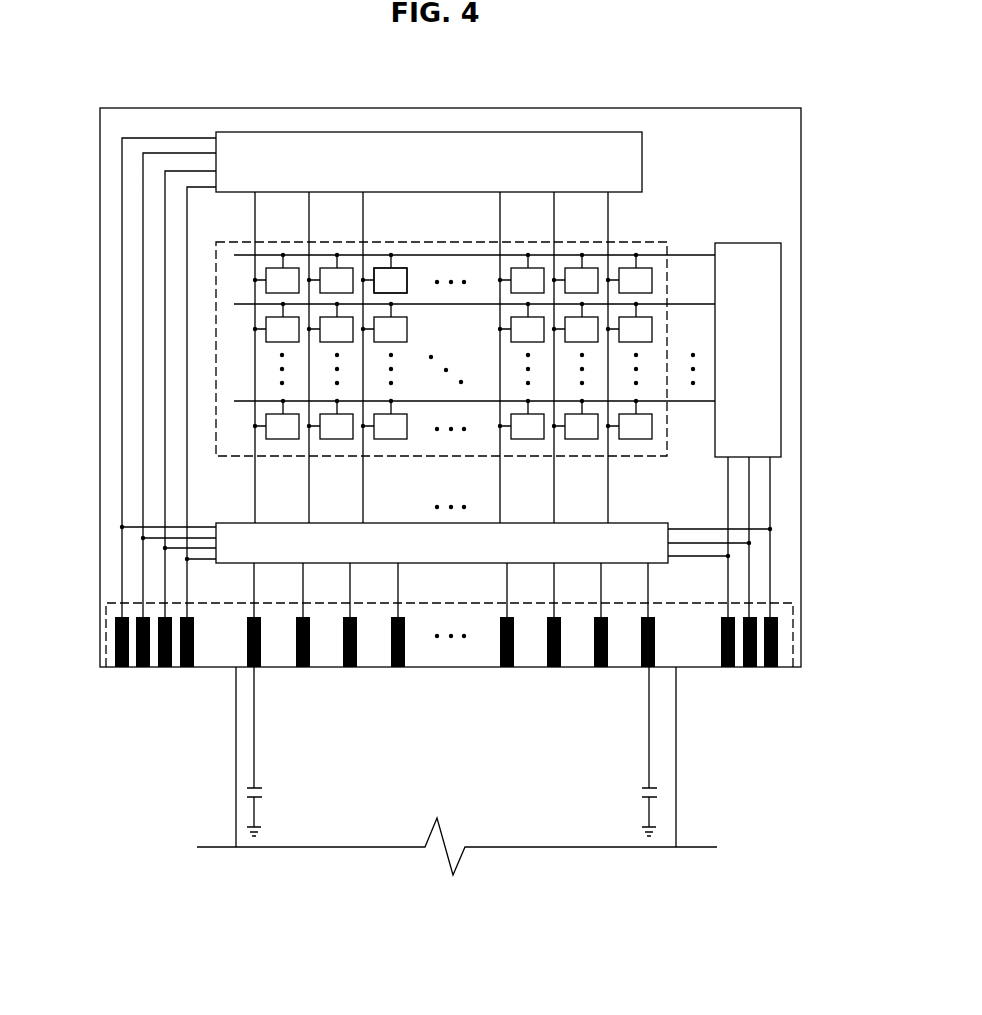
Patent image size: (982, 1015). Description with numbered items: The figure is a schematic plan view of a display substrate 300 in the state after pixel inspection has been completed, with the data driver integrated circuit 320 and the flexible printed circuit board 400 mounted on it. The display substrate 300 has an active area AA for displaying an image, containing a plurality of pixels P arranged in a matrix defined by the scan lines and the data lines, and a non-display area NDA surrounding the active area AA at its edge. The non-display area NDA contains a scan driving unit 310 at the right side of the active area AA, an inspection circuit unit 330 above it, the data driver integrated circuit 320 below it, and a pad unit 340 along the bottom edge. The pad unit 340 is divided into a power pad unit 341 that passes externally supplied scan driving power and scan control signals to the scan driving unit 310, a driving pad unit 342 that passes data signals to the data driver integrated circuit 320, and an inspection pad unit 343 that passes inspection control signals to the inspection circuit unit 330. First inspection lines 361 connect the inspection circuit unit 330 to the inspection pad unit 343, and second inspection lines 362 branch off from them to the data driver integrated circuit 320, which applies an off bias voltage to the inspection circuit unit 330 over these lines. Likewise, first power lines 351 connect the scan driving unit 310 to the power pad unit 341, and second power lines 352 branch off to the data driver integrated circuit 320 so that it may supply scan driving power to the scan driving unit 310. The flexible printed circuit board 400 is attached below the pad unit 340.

The display substrate 300 is at (801, 167).
The scan driving unit 310 is at (745, 243).
The data driver integrated circuit 320 is at (665, 523).
The inspection circuit unit 330 is at (582, 132).
The pad unit 340 is at (793, 615).
The power pad unit 341 is at (783, 675).
The driving pad unit 342 is at (245, 675).
The inspection pad unit 343 is at (192, 675).
The first power lines 351 is at (772, 482).
The second power lines 352 is at (757, 524).
The first inspection lines 361 is at (122, 323).
The second inspection lines 362 is at (134, 527).
The flexible printed circuit board 400 is at (676, 800).
The active area AA is at (657, 242).
The non-display area NDA is at (724, 135).
The pixel P is at (400, 268).